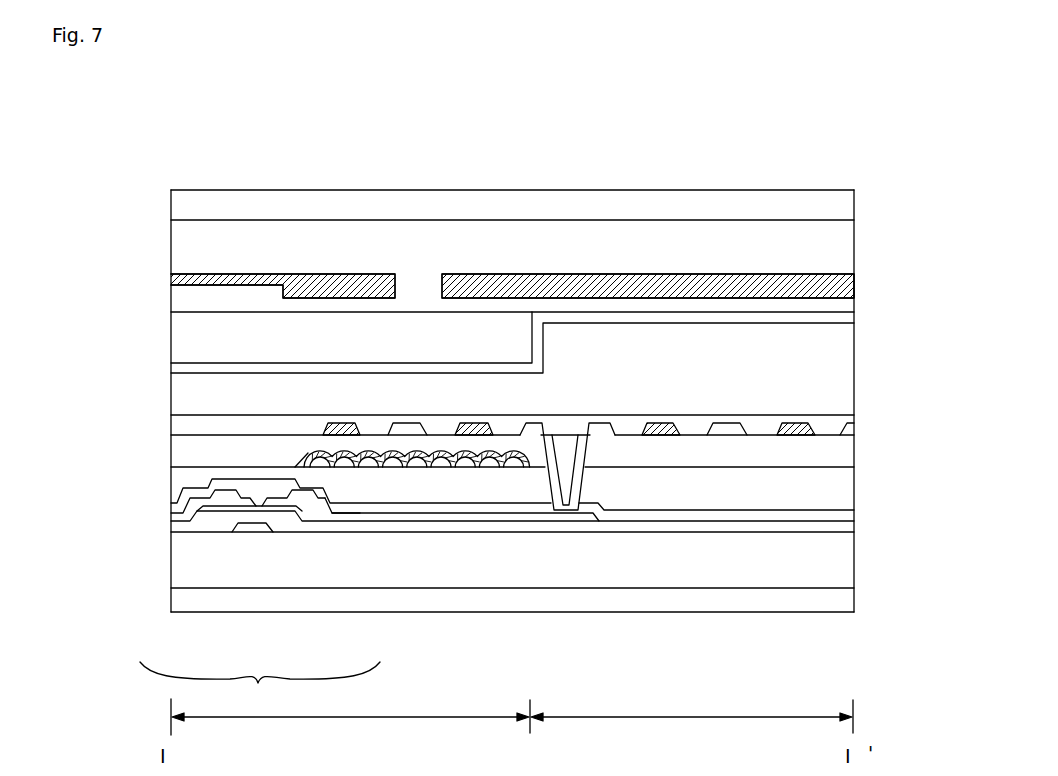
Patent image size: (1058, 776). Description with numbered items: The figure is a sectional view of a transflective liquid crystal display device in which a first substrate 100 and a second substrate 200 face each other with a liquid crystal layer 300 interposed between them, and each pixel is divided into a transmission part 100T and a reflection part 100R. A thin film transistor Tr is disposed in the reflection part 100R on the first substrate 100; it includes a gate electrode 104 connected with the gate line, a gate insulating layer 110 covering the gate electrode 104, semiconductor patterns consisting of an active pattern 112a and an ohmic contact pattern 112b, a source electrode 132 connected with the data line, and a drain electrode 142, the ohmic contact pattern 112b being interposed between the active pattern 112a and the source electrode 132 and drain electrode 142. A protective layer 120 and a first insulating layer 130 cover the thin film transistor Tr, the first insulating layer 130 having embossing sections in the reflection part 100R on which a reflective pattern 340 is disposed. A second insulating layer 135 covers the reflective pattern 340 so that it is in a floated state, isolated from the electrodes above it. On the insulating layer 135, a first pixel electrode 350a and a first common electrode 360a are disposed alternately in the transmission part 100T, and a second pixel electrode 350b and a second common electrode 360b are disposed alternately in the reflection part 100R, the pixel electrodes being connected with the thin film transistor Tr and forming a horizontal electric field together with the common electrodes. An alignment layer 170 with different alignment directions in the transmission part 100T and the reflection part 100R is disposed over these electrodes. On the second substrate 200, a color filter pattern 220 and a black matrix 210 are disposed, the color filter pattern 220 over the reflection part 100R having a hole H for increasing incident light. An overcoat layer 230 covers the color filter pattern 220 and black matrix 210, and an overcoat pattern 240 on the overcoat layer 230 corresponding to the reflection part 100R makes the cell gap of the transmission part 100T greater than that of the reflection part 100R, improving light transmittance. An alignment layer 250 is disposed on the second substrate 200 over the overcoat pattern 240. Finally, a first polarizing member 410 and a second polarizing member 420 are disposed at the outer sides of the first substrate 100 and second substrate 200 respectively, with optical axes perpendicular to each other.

The second polarizing member 420 is at (836, 207).
The second substrate 200 is at (836, 252).
The color filter pattern 220 is at (836, 294).
The black matrix 210 is at (227, 283).
The hole H is at (424, 272).
The alignment layer 250 is at (836, 324).
The overcoat pattern 240 is at (508, 330).
The overcoat layer 230 is at (648, 303).
The liquid crystal layer 300 is at (840, 376).
The alignment layer 170 is at (850, 421).
The second pixel electrode 350b is at (407, 425).
The second common electrode 360b is at (470, 425).
The first pixel electrode 350a is at (722, 423).
The first common electrode 360a is at (793, 423).
The second insulating layer 135 is at (845, 449).
The reflective pattern 340 is at (510, 442).
The first insulating layer 130 is at (838, 483).
The protective layer 120 is at (840, 517).
The drain electrode 142 is at (357, 521).
The active pattern 112a is at (200, 518).
The ohmic contact pattern 112b is at (297, 512).
The source electrode 132 is at (182, 516).
The gate insulating layer 110 is at (838, 536).
The gate electrode 104 is at (247, 528).
The first substrate 100 is at (838, 564).
The first polarizing member 410 is at (838, 609).
The thin film transistor Tr is at (260, 685).
The reflection part 100R is at (350, 740).
The transmission part 100T is at (691, 740).